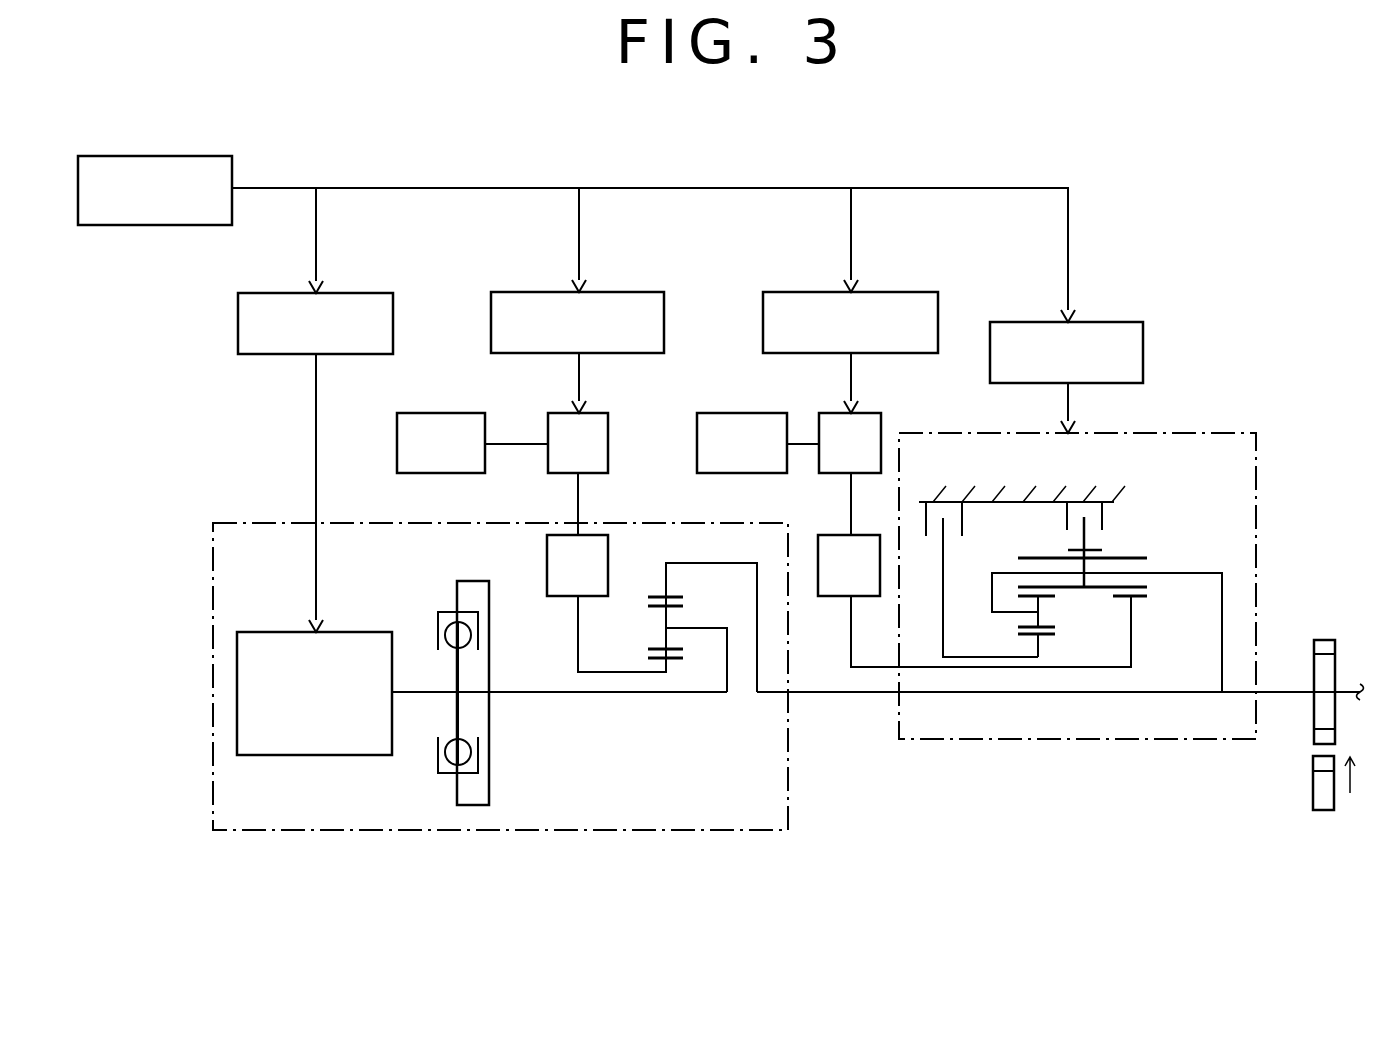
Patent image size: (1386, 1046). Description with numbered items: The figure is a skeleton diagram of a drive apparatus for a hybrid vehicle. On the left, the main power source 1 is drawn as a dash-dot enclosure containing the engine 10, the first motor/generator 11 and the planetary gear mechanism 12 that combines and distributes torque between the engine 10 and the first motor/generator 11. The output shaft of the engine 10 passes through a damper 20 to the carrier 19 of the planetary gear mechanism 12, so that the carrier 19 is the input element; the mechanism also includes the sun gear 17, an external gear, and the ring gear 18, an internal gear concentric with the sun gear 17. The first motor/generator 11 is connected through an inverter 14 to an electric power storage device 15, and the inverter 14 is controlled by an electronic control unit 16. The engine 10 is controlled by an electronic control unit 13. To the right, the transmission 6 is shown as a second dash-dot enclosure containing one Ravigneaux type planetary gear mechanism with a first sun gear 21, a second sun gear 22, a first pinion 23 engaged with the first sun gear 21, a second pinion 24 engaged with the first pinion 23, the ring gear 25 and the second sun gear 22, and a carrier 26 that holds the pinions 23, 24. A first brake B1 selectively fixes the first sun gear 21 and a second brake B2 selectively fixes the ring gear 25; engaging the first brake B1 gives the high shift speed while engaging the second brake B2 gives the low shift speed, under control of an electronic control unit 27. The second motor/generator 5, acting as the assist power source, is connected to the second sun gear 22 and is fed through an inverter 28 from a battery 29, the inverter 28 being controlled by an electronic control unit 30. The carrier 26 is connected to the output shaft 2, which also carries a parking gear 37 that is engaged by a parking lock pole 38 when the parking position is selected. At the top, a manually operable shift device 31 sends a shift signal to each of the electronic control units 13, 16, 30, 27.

The main power source 1 is at (685, 832).
The output shaft 2 is at (1293, 693).
The second motor/generator 5 is at (835, 597).
The transmission 6 is at (1208, 432).
The engine 10 is at (352, 756).
The first motor/generator 11 is at (545, 555).
The planetary gear mechanism 12 is at (667, 665).
The electronic control unit (E-ECU) 13 is at (352, 292).
The inverter 14 is at (597, 413).
The electric power storage device 15 is at (457, 413).
The electronic control unit (MG1-ECU) 16 is at (623, 292).
The sun gear 17 is at (675, 660).
The ring gear 18 is at (660, 595).
The carrier 19 is at (695, 627).
The damper 20 is at (448, 774).
The first sun gear 21 is at (1050, 640).
The second sun gear 22 is at (1142, 597).
The first pinion 23 is at (1050, 625).
The second pinion 24 is at (1037, 556).
The ring gear 25 is at (1088, 548).
The carrier 26 is at (1178, 572).
The electronic control unit (T-ECU) 27 is at (1120, 322).
The inverter 28 is at (870, 413).
The battery 29 is at (758, 413).
The electronic control unit (MG2-ECU) 30 is at (897, 292).
The shift device 31 is at (182, 155).
The parking gear 37 is at (1326, 639).
The parking lock pole 38 is at (1313, 792).
The first brake B1 is at (950, 500).
The second brake B2 is at (1103, 497).